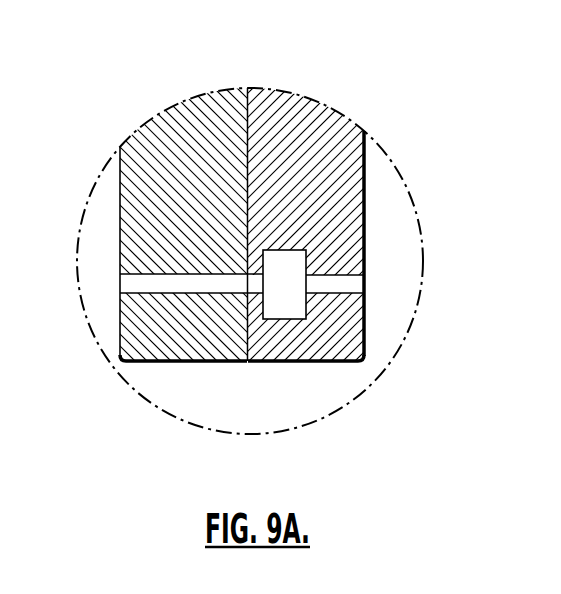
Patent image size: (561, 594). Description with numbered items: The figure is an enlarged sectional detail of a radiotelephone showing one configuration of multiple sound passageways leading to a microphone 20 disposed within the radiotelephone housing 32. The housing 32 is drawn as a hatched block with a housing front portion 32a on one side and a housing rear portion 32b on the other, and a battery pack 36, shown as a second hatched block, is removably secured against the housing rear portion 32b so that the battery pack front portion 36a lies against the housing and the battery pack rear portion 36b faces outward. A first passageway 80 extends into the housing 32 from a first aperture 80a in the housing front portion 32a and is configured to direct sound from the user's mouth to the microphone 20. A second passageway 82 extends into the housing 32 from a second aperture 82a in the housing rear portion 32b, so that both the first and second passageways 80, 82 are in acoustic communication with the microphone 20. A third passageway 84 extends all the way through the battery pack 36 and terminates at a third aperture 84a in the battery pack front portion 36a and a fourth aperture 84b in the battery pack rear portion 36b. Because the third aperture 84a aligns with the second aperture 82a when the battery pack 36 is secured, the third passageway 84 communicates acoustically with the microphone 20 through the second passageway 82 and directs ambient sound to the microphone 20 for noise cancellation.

The microphone 20 is at (297, 250).
The radiotelephone housing 32 is at (330, 153).
The housing front portion 32a is at (364, 187).
The housing rear portion 32b is at (230, 130).
The battery pack 36 is at (135, 167).
The battery pack front portion 36a is at (252, 166).
The battery pack rear portion 36b is at (120, 212).
The first passageway 80 is at (340, 287).
The first aperture 80a is at (364, 283).
The second passageway 82 is at (257, 283).
The second aperture 82a is at (256, 255).
The third passageway 84 is at (153, 282).
The third aperture 84a is at (247, 284).
The fourth aperture 84b is at (120, 288).